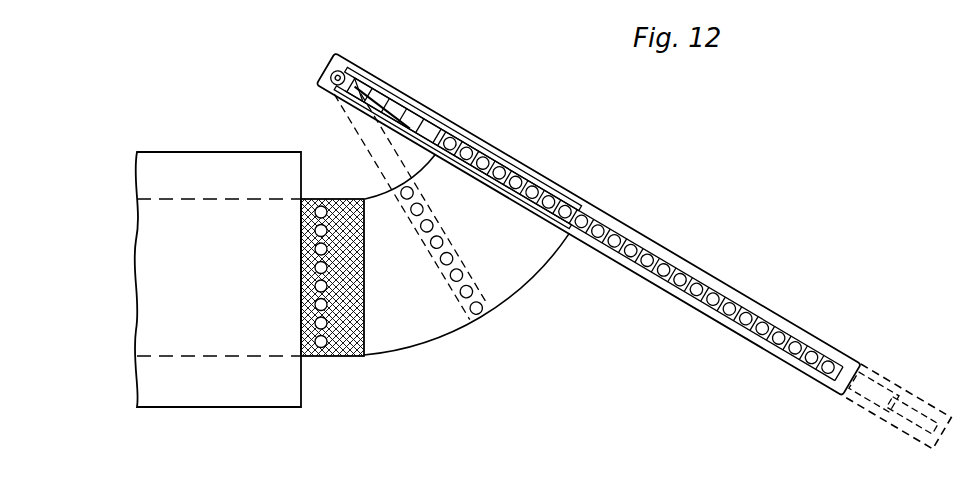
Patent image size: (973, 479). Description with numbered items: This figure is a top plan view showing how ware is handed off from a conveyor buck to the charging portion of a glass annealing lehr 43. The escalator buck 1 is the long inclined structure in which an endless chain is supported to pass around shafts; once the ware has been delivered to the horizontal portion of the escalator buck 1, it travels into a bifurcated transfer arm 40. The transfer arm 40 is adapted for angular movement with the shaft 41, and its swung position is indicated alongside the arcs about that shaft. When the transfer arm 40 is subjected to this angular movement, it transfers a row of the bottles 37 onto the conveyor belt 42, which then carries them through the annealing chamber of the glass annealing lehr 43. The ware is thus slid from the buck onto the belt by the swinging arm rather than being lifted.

The escalator buck 1 is at (822, 335).
The bottles 37 is at (556, 200).
The bifurcated transfer arm 40 is at (518, 162).
The shaft 41 is at (340, 73).
The conveyor belt 42 is at (343, 357).
The glass annealing lehr 43 is at (177, 162).